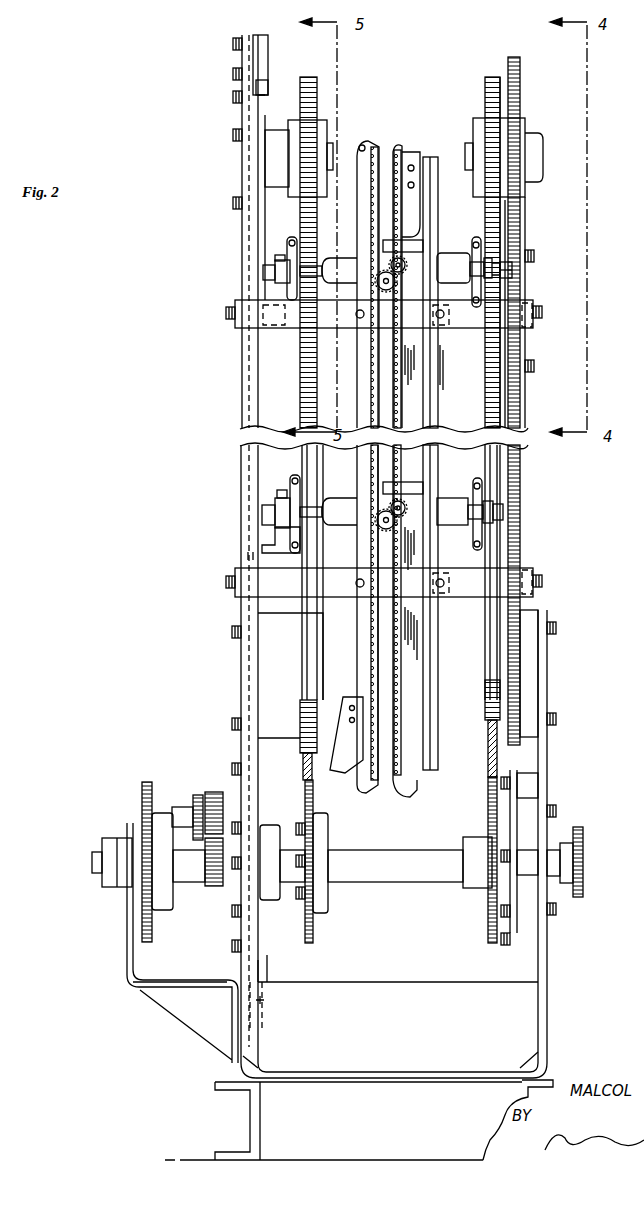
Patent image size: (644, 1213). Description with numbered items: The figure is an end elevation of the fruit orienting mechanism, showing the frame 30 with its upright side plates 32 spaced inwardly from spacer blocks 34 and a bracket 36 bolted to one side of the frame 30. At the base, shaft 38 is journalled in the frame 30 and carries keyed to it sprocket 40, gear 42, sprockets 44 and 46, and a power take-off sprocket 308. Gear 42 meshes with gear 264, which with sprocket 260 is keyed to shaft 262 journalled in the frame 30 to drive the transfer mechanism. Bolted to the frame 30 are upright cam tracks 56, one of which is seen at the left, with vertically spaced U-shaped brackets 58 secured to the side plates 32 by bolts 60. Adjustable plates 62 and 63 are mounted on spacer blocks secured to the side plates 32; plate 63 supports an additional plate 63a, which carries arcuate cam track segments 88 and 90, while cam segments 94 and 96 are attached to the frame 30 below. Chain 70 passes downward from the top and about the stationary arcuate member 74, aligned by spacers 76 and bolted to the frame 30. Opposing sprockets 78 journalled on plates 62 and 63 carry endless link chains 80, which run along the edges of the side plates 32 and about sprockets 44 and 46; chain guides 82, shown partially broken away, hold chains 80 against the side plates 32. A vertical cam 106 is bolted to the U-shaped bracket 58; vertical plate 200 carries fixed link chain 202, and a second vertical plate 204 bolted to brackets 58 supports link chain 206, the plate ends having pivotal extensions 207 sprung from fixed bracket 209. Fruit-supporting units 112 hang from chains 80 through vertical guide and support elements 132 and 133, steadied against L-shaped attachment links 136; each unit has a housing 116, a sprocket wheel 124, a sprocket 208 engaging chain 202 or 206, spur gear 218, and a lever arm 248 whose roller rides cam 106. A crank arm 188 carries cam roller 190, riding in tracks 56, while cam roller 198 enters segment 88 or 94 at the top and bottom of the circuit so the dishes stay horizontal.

The frame 30 is at (241, 677).
The upright side plates 32 is at (305, 765).
The spacer blocks 34 is at (290, 662).
The bracket 36 is at (128, 925).
The shaft 38 is at (98, 868).
The sprocket 40 is at (142, 800).
The gear 42 is at (215, 888).
The sprocket 44 is at (315, 930).
The sprocket 46 is at (490, 916).
The upright cam tracks 56 is at (250, 380).
The U-shaped brackets 58 is at (520, 322).
The bolts 60 is at (226, 314).
The plate 62 is at (258, 222).
The plate 63 is at (524, 212).
The additional plate 63a is at (242, 116).
The chain 70 is at (518, 98).
The stationary arcuate member 74 is at (512, 832).
The spacers 76 is at (535, 788).
The opposing sprockets 78 is at (298, 125).
The endless link chains 80 is at (306, 78).
The chain guides 82 is at (498, 617).
The arcuate cam track segment 88 is at (268, 48).
The arcuate cam track segment 90 is at (265, 160).
The cam segment 94 is at (267, 965).
The cam segment 96 is at (264, 1003).
The vertical cam 106 is at (433, 372).
The fruit-supporting units 112 is at (350, 527).
The housing 116 is at (460, 249).
The sprocket wheel 124 is at (518, 278).
The vertical guide and support element 132 is at (478, 485).
The vertical guide and support element 133 is at (290, 245).
The L-shaped attachment links 136 is at (300, 478).
The crank arm 188 is at (272, 540).
The cam roller 190 is at (248, 556).
The cam roller 198 is at (262, 503).
The vertical plate 200 is at (412, 420).
The link chain 202 is at (420, 640).
The vertical plate 204 is at (365, 383).
The link chain 206 is at (372, 620).
The pivotal extensions 207 is at (400, 150).
The sprocket 208 is at (385, 292).
The fixed bracket 209 is at (340, 768).
The spur gear 218 is at (392, 262).
The lever arm 248 is at (414, 240).
The sprocket 260 is at (197, 795).
The shaft 262 is at (182, 807).
The gear 264 is at (214, 792).
The sprocket 308 is at (582, 845).